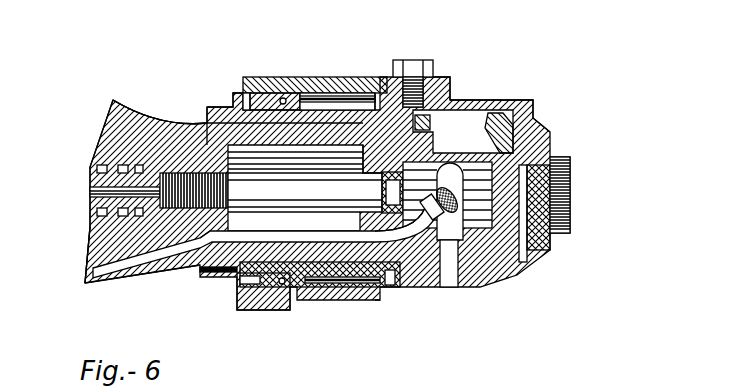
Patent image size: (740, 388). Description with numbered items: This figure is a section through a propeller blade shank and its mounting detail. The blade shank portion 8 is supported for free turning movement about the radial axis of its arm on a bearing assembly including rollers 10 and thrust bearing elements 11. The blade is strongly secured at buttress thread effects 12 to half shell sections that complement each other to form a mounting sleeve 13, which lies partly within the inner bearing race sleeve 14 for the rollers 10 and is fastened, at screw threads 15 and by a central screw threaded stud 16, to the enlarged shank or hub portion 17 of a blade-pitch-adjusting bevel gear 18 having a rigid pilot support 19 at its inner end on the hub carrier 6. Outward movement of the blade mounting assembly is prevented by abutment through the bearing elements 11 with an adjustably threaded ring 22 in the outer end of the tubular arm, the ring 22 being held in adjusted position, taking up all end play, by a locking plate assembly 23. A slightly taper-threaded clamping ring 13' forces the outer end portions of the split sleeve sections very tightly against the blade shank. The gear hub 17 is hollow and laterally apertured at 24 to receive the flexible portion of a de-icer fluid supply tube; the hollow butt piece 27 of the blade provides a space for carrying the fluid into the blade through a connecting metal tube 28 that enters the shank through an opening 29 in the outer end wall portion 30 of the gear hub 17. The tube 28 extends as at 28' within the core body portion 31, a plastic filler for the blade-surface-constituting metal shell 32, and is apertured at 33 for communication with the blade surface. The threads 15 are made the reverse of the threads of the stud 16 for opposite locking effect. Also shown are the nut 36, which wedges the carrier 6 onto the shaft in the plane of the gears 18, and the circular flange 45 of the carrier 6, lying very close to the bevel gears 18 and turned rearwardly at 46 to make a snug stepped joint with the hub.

The hub carrier 6 is at (537, 110).
The shank portion 8 is at (165, 118).
The rollers 10 is at (352, 93).
The thrust bearing elements 11 is at (278, 77).
The buttress thread effects 12 is at (297, 287).
The mounting sleeve 13 is at (337, 198).
The clamping ring 13' is at (278, 294).
The inner bearing race sleeve 14 is at (300, 93).
The screw threads 15 is at (381, 85).
The central screw threaded stud 16 is at (305, 188).
The shank or hub portion 17 is at (467, 103).
The blade-pitch-adjusting bevel gear 18 is at (512, 102).
The pilot support 19 is at (523, 248).
The adjustably threaded ring 22 is at (263, 308).
The locking plate assembly 23 is at (233, 95).
The lateral aperture 24 is at (457, 247).
The hollow butt piece 27 is at (250, 245).
The connecting metal tube 28 is at (371, 221).
The tube extension 28' is at (176, 268).
The opening 29 is at (398, 290).
The outer end wall portion 30 is at (363, 168).
The core body portion 31 is at (85, 240).
The metal shell 32 is at (136, 94).
The aperture 33 is at (123, 275).
The nut 36 is at (567, 188).
The circular flange 45 is at (487, 100).
The rearwardly turned portion 46 is at (435, 77).